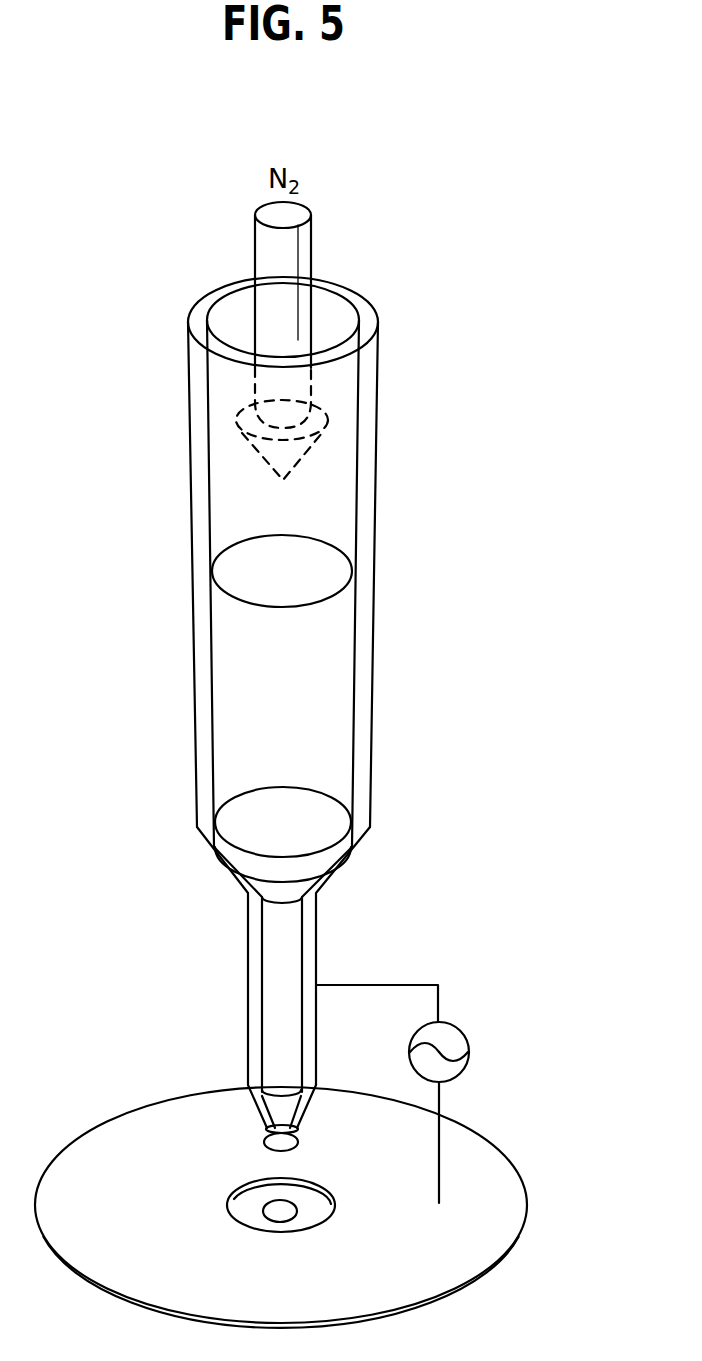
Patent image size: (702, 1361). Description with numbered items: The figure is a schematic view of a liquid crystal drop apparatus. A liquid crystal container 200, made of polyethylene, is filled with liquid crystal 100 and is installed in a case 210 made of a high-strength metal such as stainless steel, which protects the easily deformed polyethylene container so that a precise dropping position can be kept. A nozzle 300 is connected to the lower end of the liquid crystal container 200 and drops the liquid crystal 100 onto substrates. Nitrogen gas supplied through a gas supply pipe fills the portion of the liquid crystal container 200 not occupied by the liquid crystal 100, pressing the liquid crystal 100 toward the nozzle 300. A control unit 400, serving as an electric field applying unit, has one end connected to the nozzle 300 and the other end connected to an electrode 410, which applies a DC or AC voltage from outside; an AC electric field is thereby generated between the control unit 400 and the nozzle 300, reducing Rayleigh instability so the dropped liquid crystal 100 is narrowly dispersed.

The liquid crystal 100 is at (327, 734).
The liquid crystal container 200 is at (332, 511).
The case 210 is at (363, 656).
The nozzle 300 is at (253, 1032).
The control unit 400 is at (458, 1032).
The electrode 410 is at (480, 1168).